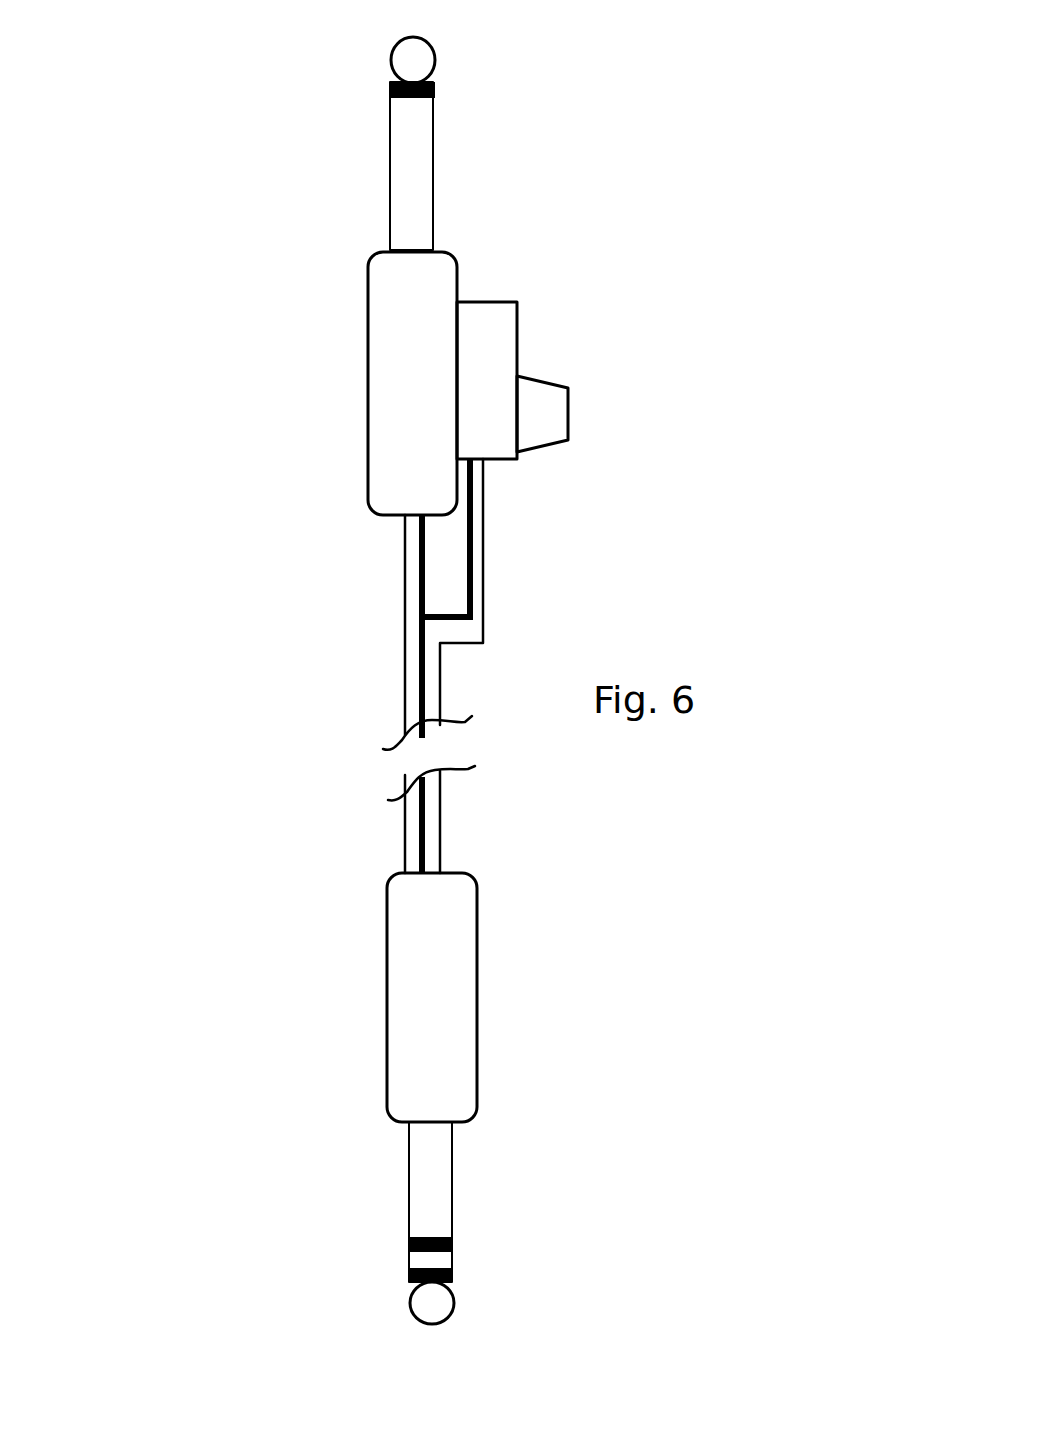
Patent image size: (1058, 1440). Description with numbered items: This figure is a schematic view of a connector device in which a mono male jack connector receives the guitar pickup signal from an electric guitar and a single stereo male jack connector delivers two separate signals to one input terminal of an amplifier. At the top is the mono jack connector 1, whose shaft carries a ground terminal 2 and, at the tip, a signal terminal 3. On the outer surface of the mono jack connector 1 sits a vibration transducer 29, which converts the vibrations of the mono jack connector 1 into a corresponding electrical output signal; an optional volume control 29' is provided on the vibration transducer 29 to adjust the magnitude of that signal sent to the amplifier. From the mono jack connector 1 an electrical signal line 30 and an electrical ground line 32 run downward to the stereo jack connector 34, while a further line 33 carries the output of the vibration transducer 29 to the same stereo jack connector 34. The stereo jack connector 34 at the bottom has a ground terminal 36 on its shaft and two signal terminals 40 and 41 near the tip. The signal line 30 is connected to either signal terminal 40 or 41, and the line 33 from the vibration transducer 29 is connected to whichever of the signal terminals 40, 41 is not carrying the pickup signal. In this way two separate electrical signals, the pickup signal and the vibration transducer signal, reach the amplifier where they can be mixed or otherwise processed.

The mono jack connector 1 is at (393, 369).
The ground terminal 2 is at (410, 218).
The signal terminal 3 is at (408, 72).
The vibration transducer 29 is at (594, 358).
The volume control 29' is at (637, 398).
The electrical signal line 30 is at (403, 648).
The electrical ground line 32 is at (472, 537).
The line 33 is at (485, 588).
The stereo jack connector 34 is at (403, 968).
The ground terminal 36 is at (425, 1180).
The signal terminal 40 is at (423, 1263).
The signal terminal 41 is at (443, 1300).